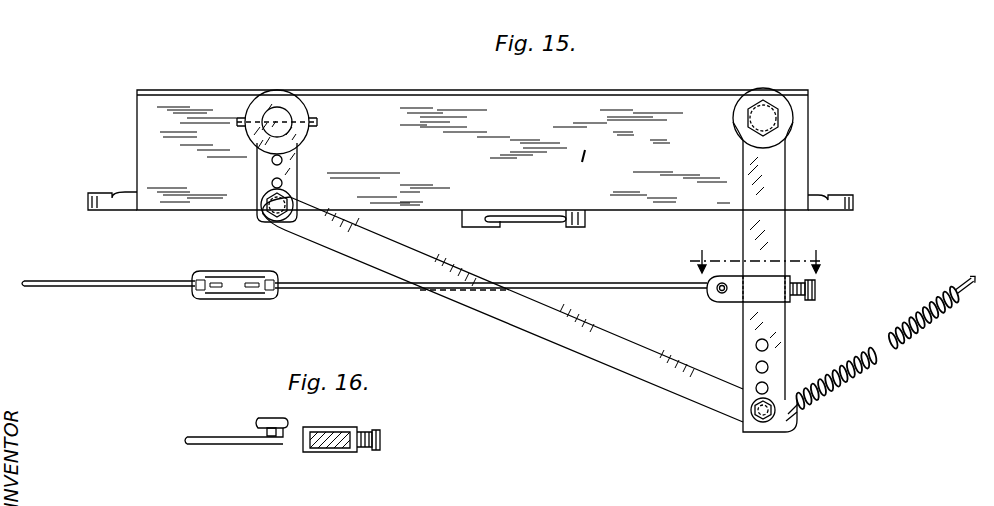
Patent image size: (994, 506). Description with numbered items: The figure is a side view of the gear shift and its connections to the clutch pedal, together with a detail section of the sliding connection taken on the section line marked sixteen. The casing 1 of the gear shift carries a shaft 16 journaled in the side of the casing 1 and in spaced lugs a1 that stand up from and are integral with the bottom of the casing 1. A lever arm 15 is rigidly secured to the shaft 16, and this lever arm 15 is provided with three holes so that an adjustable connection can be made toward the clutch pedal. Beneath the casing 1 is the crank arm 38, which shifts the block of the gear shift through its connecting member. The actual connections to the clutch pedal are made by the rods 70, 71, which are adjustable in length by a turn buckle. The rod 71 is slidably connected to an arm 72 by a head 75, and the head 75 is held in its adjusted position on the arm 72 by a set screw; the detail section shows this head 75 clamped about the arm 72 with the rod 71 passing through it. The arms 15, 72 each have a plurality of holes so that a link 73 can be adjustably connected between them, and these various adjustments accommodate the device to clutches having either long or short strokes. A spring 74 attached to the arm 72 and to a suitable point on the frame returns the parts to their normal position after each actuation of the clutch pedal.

In FIG. 15, the casing 1 is at (472, 150).
In FIG. 15, the spaced lugs a1 is at (856, 186).
In FIG. 15, the lever arm 15 is at (285, 117).
In FIG. 15, the shaft 16 is at (760, 261).
In FIG. 15, the crank arm 38 is at (545, 222).
In FIG. 15, the rod 70 is at (44, 286).
In FIG. 15, the rod 71 is at (337, 290).
In FIG. 16, the rod 71 is at (220, 437).
In FIG. 15, the arm 72 is at (768, 242).
In FIG. 16, the arm 72 is at (340, 452).
In FIG. 15, the link 73 is at (516, 313).
In FIG. 15, the spring 74 is at (850, 383).
In FIG. 15, the head 75 is at (768, 290).
In FIG. 16, the head 75 is at (315, 455).